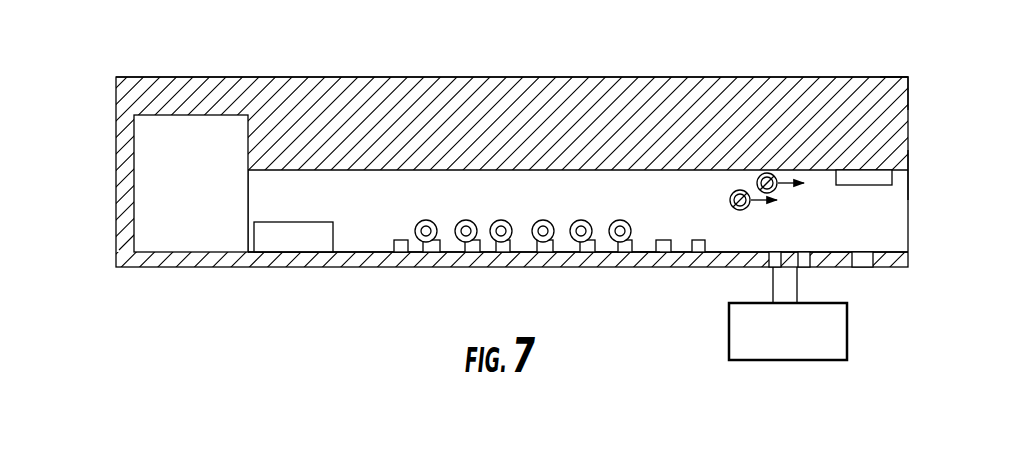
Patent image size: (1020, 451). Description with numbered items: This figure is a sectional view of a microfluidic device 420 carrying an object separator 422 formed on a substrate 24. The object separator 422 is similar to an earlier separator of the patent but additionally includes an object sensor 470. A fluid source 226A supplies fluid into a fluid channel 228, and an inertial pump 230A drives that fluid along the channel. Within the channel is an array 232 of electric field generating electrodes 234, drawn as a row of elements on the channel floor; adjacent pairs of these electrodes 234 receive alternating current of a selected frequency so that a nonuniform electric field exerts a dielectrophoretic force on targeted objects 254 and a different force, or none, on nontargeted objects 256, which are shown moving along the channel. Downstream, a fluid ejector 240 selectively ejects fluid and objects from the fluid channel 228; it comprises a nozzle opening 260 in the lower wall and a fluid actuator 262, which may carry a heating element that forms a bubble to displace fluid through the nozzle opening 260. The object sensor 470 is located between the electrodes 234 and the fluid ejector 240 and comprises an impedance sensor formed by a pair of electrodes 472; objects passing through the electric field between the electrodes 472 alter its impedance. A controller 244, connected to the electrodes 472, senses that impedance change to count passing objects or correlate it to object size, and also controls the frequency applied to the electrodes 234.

The microfluidic device 420 is at (86, 96).
The substrate 24 is at (798, 77).
The object separator 422 is at (896, 74).
The fluid ejector 240 is at (918, 171).
The fluid source 226A is at (134, 152).
The inertial pump 230A is at (292, 222).
The fluid channel 228 is at (364, 250).
The targeted objects 254 is at (497, 221).
The array of electric field generating electrodes 232 is at (666, 237).
The electric field generating electrodes 234 is at (648, 252).
The nontargeted objects 256 is at (734, 211).
The fluid actuator 262 is at (893, 177).
The nozzle opening 260 is at (873, 251).
The object sensor 470 is at (785, 253).
The electrodes 472 is at (758, 268).
The controller 244 is at (790, 361).